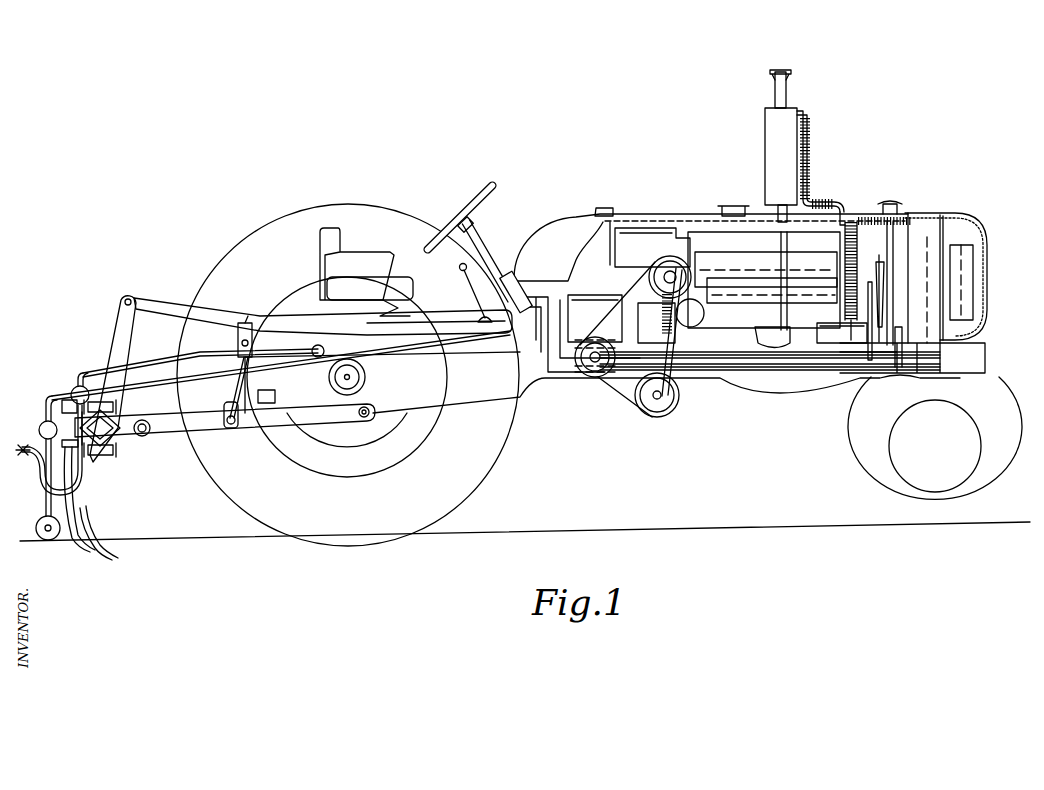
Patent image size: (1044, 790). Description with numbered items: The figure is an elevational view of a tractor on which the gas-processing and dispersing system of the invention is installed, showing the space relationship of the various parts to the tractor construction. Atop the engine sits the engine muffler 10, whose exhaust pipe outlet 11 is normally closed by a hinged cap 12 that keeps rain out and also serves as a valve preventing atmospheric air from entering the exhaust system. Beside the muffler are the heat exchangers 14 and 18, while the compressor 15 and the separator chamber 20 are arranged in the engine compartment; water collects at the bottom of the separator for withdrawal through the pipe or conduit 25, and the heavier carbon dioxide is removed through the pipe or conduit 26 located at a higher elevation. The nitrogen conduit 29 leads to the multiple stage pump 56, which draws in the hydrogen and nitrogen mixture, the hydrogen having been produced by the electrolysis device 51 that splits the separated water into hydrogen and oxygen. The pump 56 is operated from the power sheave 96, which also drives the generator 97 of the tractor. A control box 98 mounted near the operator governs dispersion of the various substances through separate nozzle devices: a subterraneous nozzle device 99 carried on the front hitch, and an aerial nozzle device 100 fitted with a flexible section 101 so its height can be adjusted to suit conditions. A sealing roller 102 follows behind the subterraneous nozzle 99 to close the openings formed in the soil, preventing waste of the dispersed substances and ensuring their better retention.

The engine muffler 10 is at (771, 147).
The exhaust pipe outlet 11 is at (784, 92).
The hinged cap 12 is at (788, 71).
The heat exchanger 14 is at (813, 148).
The compressor 15 is at (830, 332).
The heat exchanger 18 is at (856, 230).
The separator chamber 20 is at (945, 222).
The pipe or conduit 25 is at (758, 354).
The pipe or conduit 26 is at (832, 364).
The nitrogen conduit 29 is at (655, 228).
The electrolysis device 51 is at (598, 298).
The multiple stage pump 56 is at (668, 260).
The power sheave 96 is at (594, 375).
The generator 97 is at (663, 410).
The control box 98 is at (527, 281).
The subterraneous nozzle device 99 is at (72, 530).
The aerial nozzle device 100 is at (25, 446).
The flexible section 101 is at (60, 478).
The sealing roller 102 is at (48, 541).